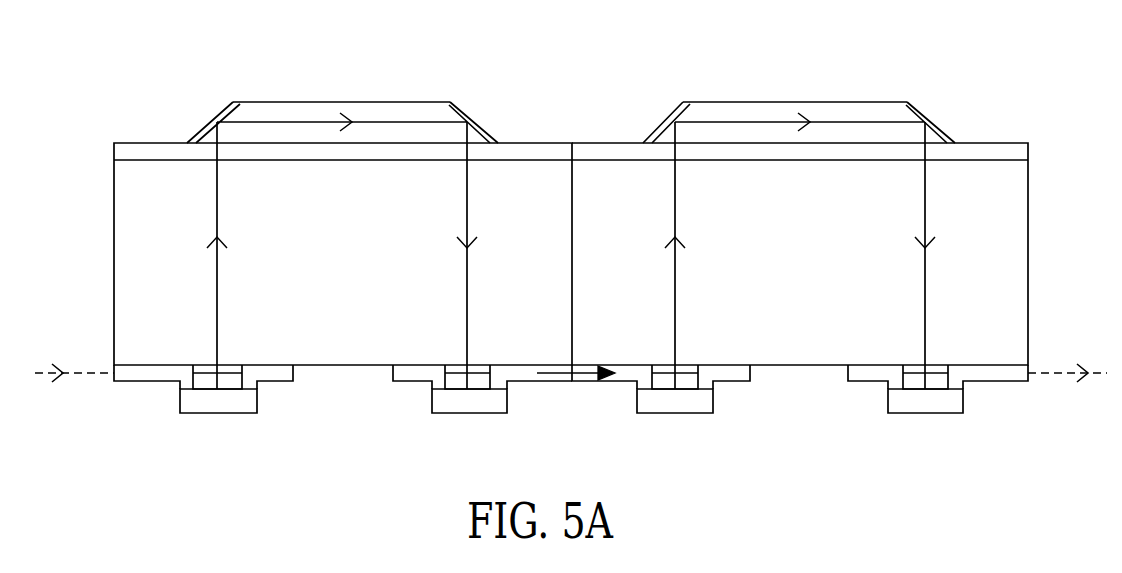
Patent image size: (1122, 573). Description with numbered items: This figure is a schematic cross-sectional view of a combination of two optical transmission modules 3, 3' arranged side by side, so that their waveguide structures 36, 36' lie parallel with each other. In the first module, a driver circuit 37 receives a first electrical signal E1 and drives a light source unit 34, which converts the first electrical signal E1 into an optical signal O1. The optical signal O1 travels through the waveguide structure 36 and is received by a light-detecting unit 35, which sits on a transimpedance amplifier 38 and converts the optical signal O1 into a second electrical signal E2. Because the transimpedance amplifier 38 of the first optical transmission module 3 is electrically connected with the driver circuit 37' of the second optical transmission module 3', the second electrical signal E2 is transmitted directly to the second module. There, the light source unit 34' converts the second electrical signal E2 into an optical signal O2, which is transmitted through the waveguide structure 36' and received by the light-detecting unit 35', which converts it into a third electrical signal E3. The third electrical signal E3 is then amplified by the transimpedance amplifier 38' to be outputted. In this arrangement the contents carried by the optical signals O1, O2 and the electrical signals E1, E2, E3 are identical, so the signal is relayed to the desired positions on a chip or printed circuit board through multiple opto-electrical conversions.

The optical transmission module 3 is at (343, 183).
The optical transmission module 3' is at (800, 183).
The waveguide structure 36 is at (342, 98).
The waveguide structure 36' is at (799, 98).
The driver circuit 37 is at (200, 400).
The driver circuit 37' is at (661, 400).
The transimpedance amplifier 38 is at (482, 400).
The transimpedance amplifier 38' is at (944, 400).
The light source unit 34 is at (214, 427).
The light source unit 34' is at (668, 427).
The light-detecting unit 35 is at (475, 427).
The light-detecting unit 35' is at (932, 427).
The optical signal O1 is at (318, 122).
The optical signal O2 is at (777, 122).
The first electrical signal E1 is at (92, 373).
The second electrical signal E2 is at (580, 372).
The third electrical signal E3 is at (1053, 373).